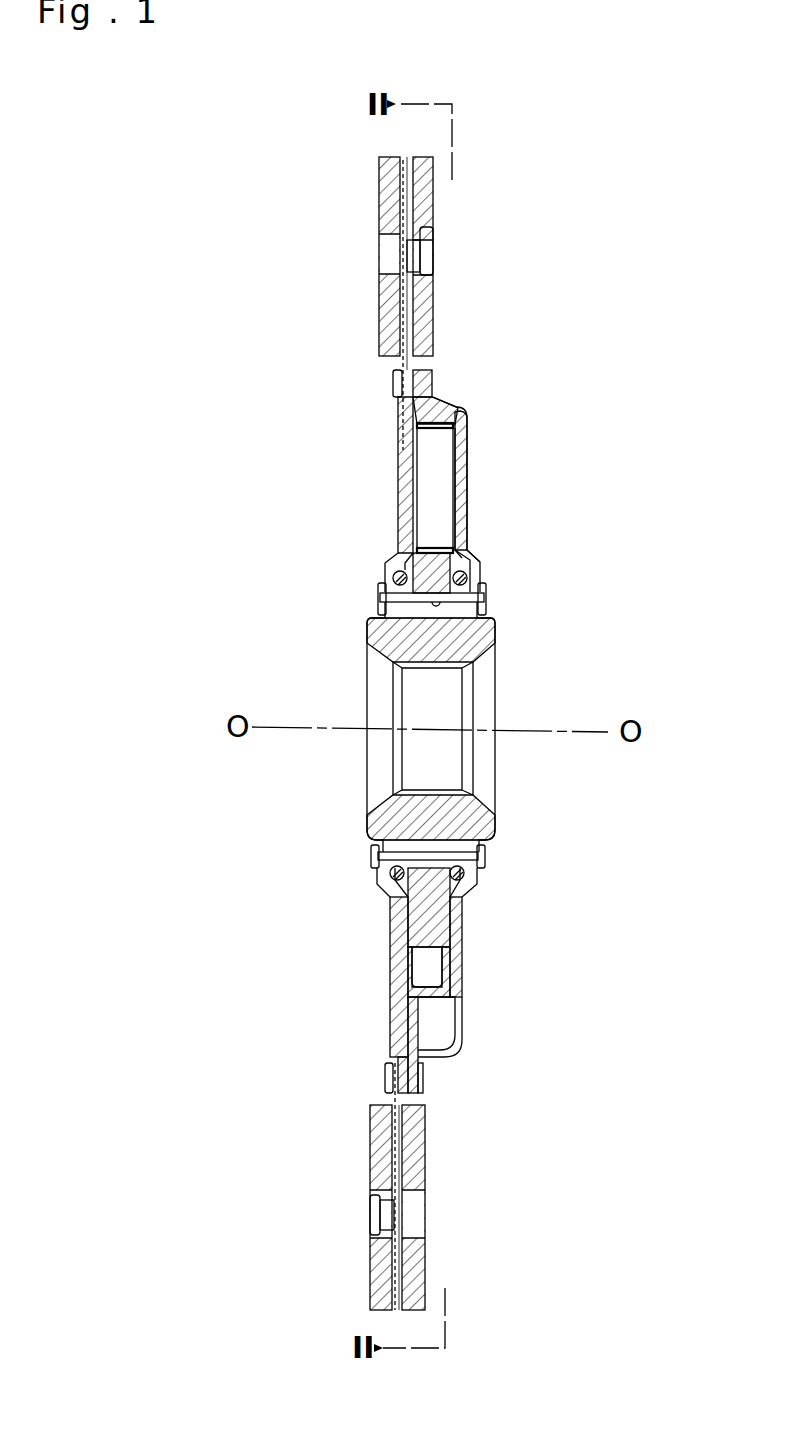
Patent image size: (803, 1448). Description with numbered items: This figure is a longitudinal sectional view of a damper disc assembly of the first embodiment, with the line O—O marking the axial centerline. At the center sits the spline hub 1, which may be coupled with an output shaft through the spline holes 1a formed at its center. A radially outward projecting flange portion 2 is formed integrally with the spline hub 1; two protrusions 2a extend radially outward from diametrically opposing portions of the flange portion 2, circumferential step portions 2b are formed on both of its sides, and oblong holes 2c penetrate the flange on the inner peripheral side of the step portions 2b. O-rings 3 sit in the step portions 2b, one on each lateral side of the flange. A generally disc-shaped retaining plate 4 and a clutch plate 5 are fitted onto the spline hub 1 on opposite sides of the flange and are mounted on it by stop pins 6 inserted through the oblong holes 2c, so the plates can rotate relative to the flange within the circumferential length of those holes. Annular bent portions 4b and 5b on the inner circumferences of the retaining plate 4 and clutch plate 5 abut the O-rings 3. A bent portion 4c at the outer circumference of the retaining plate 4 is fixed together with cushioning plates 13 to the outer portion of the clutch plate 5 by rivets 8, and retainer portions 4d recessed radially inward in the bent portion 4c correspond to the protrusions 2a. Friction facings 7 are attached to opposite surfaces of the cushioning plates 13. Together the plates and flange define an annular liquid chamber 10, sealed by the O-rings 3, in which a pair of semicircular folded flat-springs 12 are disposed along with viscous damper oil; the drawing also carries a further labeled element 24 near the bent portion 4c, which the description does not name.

The spline hub 1 is at (495, 638).
The spline holes 1a is at (473, 687).
The flange portion 2 is at (458, 545).
The protrusions 2a is at (462, 930).
The circumferential step portions 2b is at (376, 866).
The oblong holes 2c is at (375, 632).
The O-rings 3 is at (392, 572).
The retaining plate 4 is at (468, 425).
The annular bent portion 4b is at (480, 554).
The bent portion 4c is at (445, 403).
The retainer portions 4d is at (436, 1007).
The clutch plate 5 is at (400, 422).
The annular bent portion 5b is at (405, 560).
The stop pins 6 is at (486, 597).
The friction facings 7 is at (379, 188).
The rivets 8 is at (392, 383).
The annular liquid chamber 10 is at (471, 458).
The folded flat-springs 12 is at (435, 470).
The cushioning plates 13 is at (413, 310).
The seal 24 is at (435, 402).